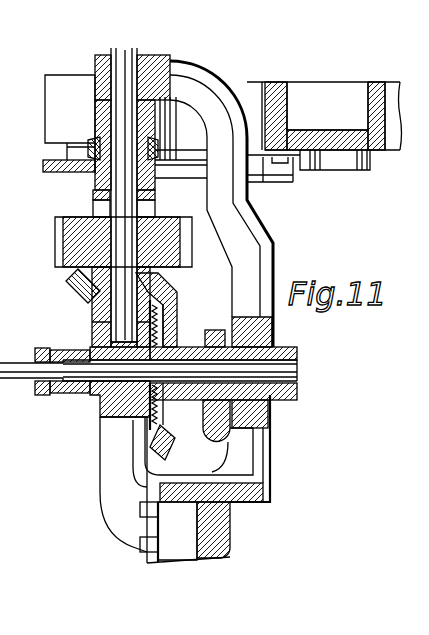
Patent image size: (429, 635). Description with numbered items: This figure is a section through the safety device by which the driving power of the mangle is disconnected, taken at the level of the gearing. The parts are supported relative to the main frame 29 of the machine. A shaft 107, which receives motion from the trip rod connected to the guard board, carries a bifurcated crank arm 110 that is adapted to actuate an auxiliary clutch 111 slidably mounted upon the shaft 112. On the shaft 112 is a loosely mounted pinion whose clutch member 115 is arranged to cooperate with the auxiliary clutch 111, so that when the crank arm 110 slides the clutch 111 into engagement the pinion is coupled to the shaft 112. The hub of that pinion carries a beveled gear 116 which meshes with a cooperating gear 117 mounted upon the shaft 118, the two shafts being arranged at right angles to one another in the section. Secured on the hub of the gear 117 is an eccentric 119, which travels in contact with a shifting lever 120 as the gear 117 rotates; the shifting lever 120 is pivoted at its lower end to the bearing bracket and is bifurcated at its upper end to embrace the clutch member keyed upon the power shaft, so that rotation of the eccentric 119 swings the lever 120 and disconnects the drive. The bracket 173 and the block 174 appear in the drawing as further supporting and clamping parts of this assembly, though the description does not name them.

The main frame 29 is at (324, 132).
The shaft 107 is at (0, 178).
The bifurcated crank arm 110 is at (90, 138).
The auxiliary clutch 111 is at (155, 190).
The shaft 112 is at (131, 41).
The clutch member 115 is at (93, 207).
The beveled gear 116 is at (76, 294).
The gear 117 is at (172, 297).
The shaft 118 is at (300, 372).
The eccentric 119 is at (212, 329).
The shifting lever 120 is at (230, 438).
The bottom bracket 173 is at (232, 523).
The clamp block 174 is at (58, 245).